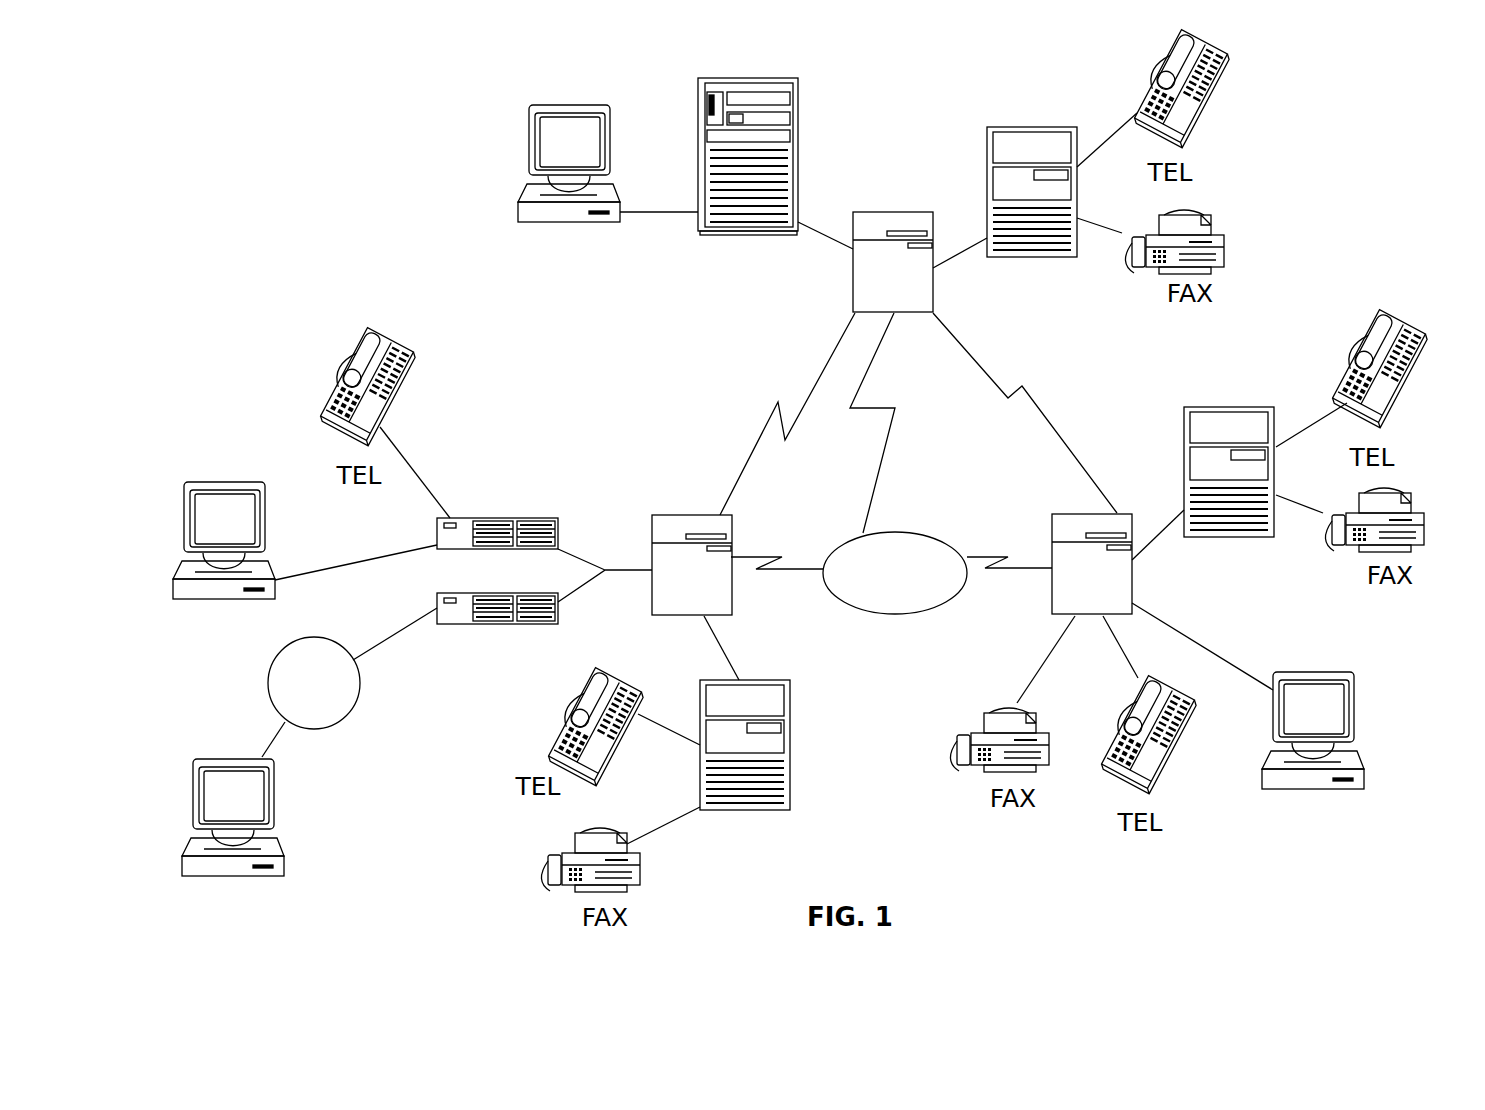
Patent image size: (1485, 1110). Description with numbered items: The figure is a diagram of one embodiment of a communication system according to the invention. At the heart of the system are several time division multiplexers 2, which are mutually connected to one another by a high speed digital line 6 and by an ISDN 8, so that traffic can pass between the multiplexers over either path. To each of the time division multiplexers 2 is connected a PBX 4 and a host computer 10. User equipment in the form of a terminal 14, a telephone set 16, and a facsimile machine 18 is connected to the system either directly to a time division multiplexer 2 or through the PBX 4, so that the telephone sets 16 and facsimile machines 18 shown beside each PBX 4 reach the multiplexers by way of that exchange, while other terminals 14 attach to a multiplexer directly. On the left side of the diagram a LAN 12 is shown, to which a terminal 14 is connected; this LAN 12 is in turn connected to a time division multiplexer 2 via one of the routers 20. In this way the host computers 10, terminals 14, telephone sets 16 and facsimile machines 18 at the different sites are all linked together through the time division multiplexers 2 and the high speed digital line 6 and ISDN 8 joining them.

The time division multiplexer 2 is at (888, 212).
The PBX 4 is at (1040, 127).
The high speed digital line 6 is at (1033, 400).
The ISDN 8 is at (892, 615).
The host computer 10 is at (743, 236).
The LAN 12 is at (270, 668).
The terminal 14 is at (567, 222).
The telephone set 16 is at (1205, 105).
The facsimile machine 18 is at (1225, 243).
The router 20 is at (501, 518).